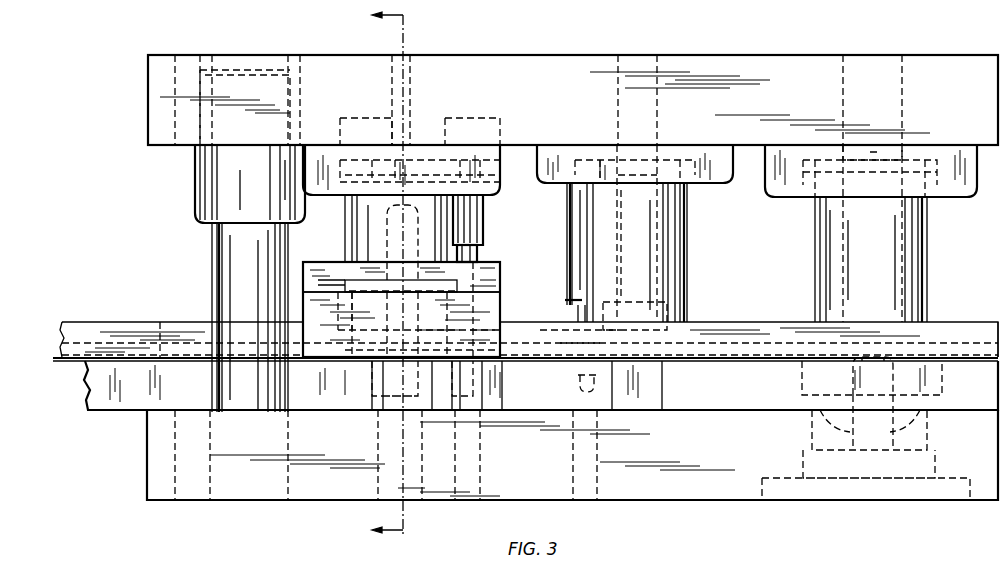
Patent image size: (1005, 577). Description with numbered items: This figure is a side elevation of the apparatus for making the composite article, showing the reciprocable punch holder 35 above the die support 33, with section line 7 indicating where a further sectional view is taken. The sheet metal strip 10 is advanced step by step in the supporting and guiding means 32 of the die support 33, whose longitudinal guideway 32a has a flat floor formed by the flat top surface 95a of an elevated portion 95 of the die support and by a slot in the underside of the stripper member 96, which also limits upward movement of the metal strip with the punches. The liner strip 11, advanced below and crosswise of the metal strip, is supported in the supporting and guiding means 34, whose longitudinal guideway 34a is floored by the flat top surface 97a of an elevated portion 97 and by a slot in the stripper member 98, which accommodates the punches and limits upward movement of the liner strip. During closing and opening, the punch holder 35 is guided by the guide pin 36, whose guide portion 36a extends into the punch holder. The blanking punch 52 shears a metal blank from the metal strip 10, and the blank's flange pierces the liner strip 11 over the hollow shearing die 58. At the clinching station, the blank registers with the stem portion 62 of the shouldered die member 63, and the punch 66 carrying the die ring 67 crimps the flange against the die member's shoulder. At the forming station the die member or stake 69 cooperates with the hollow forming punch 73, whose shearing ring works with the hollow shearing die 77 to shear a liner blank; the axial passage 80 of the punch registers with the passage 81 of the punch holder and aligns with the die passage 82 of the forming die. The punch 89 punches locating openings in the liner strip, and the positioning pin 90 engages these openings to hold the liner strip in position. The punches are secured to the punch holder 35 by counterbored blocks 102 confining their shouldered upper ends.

The section line 7- 7 is at (377, 276).
The sheet metal strip 10 is at (400, 280).
The liner strip 11 is at (57, 358).
The supporting and guiding means 32 is at (493, 282).
The longitudinal guideway 32a is at (345, 286).
The die support 33 is at (672, 490).
The supporting and guiding means 34 is at (97, 322).
The longitudinal guideway 34a is at (165, 320).
The punch holder 35 is at (551, 58).
The guide pin 36 is at (222, 258).
The guide portion 36a is at (205, 176).
The blanking punch 52 is at (357, 256).
The hollow shearing die 58 is at (372, 384).
The stem portion 62 is at (635, 316).
The shouldered die member 63 is at (648, 392).
The punch 66 is at (676, 264).
The die ring 67 is at (600, 333).
The die member or stake 69 is at (880, 444).
The forming punch 73 is at (915, 272).
The hollow shearing die 77 is at (928, 380).
The axial passage 80 is at (845, 266).
The passage 81 is at (892, 108).
The die passage 82 is at (900, 402).
The punch 89 is at (478, 240).
The positioning pin 90 is at (580, 315).
The elevated portion 95 is at (494, 300).
The flat top surface 95a is at (400, 294).
The stripper member 96 is at (490, 262).
The elevated portion 97 is at (768, 395).
The flat top surface 97a is at (790, 345).
The stripper member 98 is at (725, 312).
The counterbored block 102 is at (718, 185).